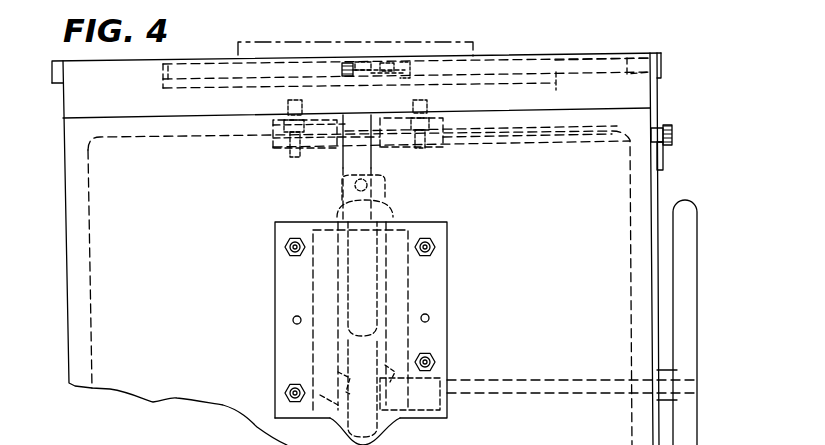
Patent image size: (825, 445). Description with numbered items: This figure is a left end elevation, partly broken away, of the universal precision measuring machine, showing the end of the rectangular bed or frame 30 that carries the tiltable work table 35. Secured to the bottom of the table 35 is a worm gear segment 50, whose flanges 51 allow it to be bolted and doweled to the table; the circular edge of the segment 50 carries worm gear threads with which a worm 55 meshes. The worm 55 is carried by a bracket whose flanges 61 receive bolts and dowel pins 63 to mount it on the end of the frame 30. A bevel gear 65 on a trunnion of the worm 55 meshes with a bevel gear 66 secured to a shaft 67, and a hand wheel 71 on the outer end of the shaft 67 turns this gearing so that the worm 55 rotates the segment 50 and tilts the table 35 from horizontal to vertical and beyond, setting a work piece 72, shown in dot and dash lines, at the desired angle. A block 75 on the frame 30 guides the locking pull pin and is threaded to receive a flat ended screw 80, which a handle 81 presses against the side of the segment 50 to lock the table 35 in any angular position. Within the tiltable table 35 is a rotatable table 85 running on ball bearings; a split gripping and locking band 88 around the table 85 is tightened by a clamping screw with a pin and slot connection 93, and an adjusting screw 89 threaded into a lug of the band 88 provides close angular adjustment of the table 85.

The frame 30 is at (68, 262).
The tiltable work table 35 is at (75, 88).
The worm gear segment 50 is at (348, 170).
The flanges 51 is at (273, 121).
The worm 55 is at (402, 227).
The flanges 61 is at (440, 277).
The dowel pins 63 is at (430, 318).
The bevel gear 65 is at (350, 373).
The bevel gear 66 is at (397, 360).
The shaft 67 is at (490, 381).
The hand wheel 71 is at (688, 335).
The work piece 72 is at (376, 42).
The block 75 is at (273, 138).
The flat ended screw 80 is at (440, 137).
The handle 81 is at (664, 158).
The rotatable table 85 is at (163, 86).
The split gripping and locking band 88 is at (163, 68).
The adjusting screw 89 is at (583, 61).
The pin and slot connection 93 is at (402, 63).